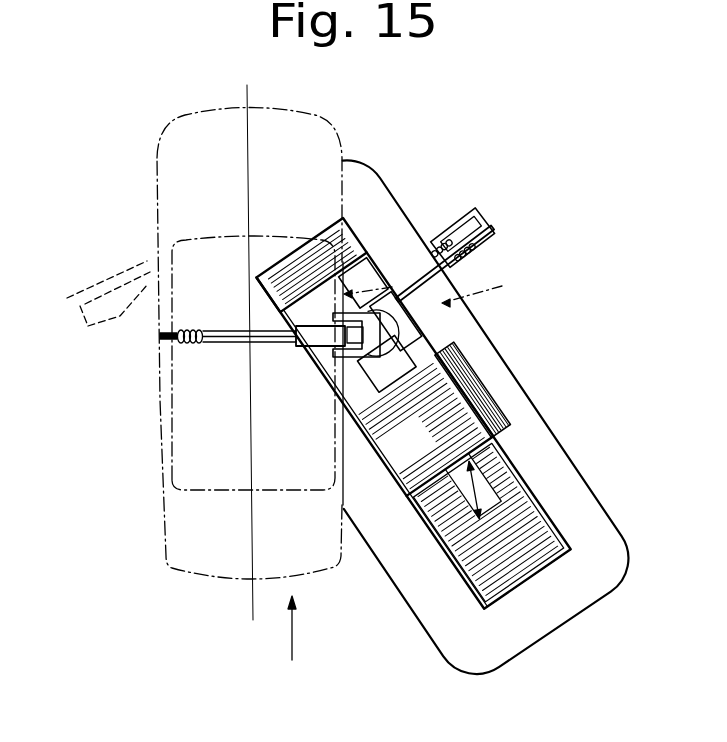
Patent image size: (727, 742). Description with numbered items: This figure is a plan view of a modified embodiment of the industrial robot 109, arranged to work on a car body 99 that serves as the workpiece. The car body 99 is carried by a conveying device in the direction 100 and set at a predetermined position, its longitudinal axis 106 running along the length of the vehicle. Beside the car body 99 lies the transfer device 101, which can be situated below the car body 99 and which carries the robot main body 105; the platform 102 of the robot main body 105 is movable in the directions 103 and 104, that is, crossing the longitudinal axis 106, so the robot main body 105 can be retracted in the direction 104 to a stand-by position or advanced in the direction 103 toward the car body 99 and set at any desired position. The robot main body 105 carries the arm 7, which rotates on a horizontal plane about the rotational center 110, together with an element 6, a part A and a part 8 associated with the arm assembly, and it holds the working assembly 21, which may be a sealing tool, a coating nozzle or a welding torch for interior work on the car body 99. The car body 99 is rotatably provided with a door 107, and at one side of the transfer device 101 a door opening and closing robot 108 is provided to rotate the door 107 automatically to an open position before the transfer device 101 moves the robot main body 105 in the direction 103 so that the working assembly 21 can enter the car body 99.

The detector unit 6 is at (367, 318).
The arm 7 is at (303, 336).
The coupling bracket A is at (343, 345).
The spring 8 is at (190, 347).
The working assembly 21 is at (163, 336).
The car body 99 is at (183, 532).
The direction 100 is at (293, 633).
The transfer device 101 is at (542, 503).
The platform 102 is at (415, 334).
The direction 103 is at (512, 460).
The direction 104 is at (412, 510).
The robot main body 105 is at (381, 388).
The longitudinal axis 106 is at (253, 595).
The door 107 is at (118, 276).
The door opening and closing robot 108 is at (484, 205).
The industrial robot 109 is at (532, 372).
The rotational center 110 is at (394, 310).